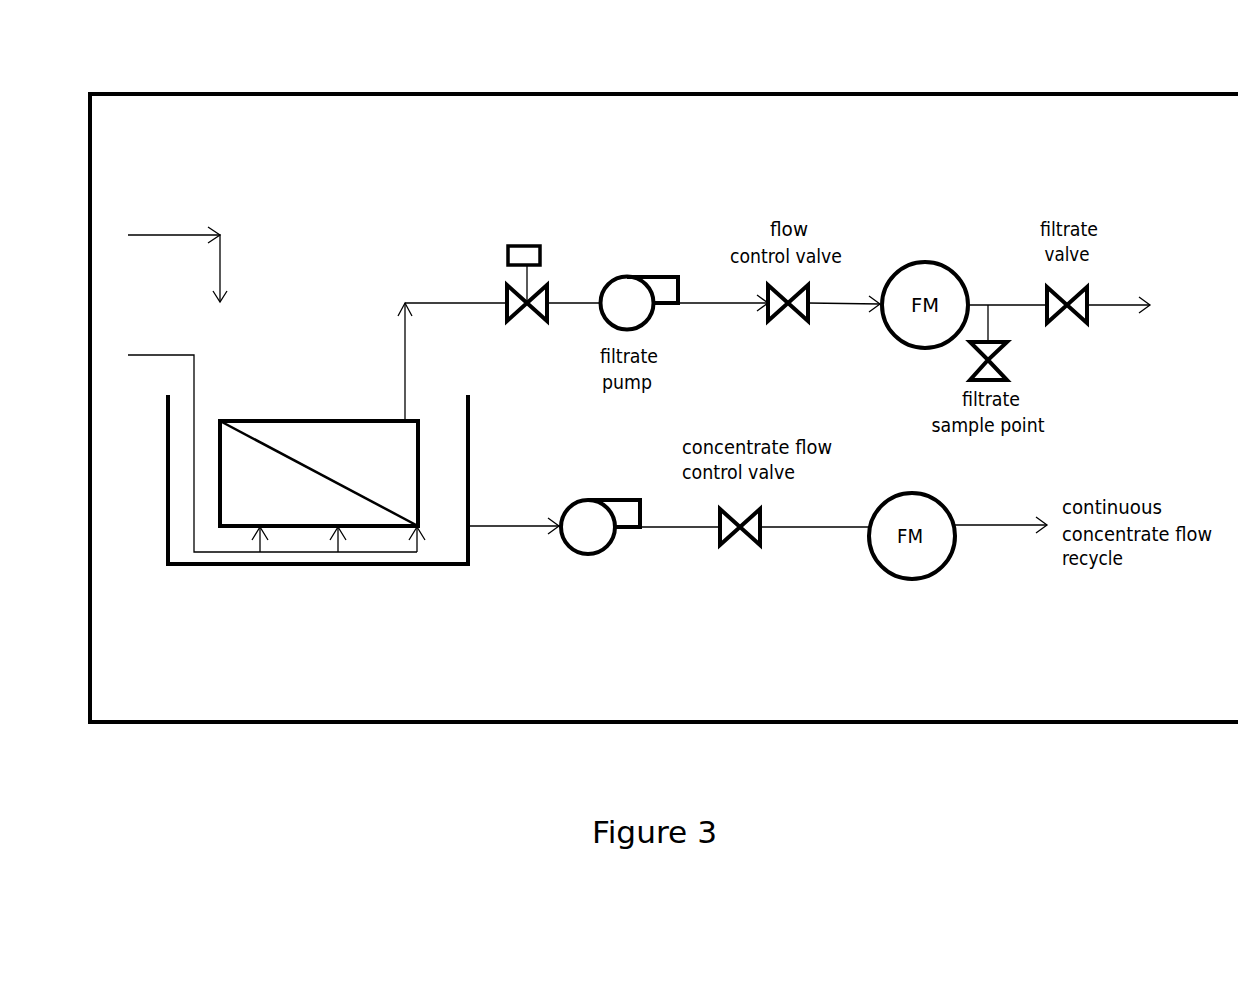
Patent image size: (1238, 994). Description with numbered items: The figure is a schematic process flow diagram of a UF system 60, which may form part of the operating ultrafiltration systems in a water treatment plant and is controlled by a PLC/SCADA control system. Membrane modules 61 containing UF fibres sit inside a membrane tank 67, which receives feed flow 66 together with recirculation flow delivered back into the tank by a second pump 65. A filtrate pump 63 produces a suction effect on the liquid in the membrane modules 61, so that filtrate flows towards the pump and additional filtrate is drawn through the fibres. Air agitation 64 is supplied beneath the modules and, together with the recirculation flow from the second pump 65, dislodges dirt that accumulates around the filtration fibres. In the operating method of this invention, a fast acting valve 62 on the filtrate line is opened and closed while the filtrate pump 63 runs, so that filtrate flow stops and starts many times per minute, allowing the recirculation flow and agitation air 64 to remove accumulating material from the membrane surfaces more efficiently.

The UF system 60 is at (540, 90).
The membrane modules 61 is at (287, 418).
The fast acting valve 62 is at (516, 237).
The filtrate pump 63 is at (635, 262).
The air agitation 64 is at (168, 355).
The second pump 65 is at (600, 552).
The feed flow 66 is at (193, 232).
The membrane tank 67 is at (430, 567).